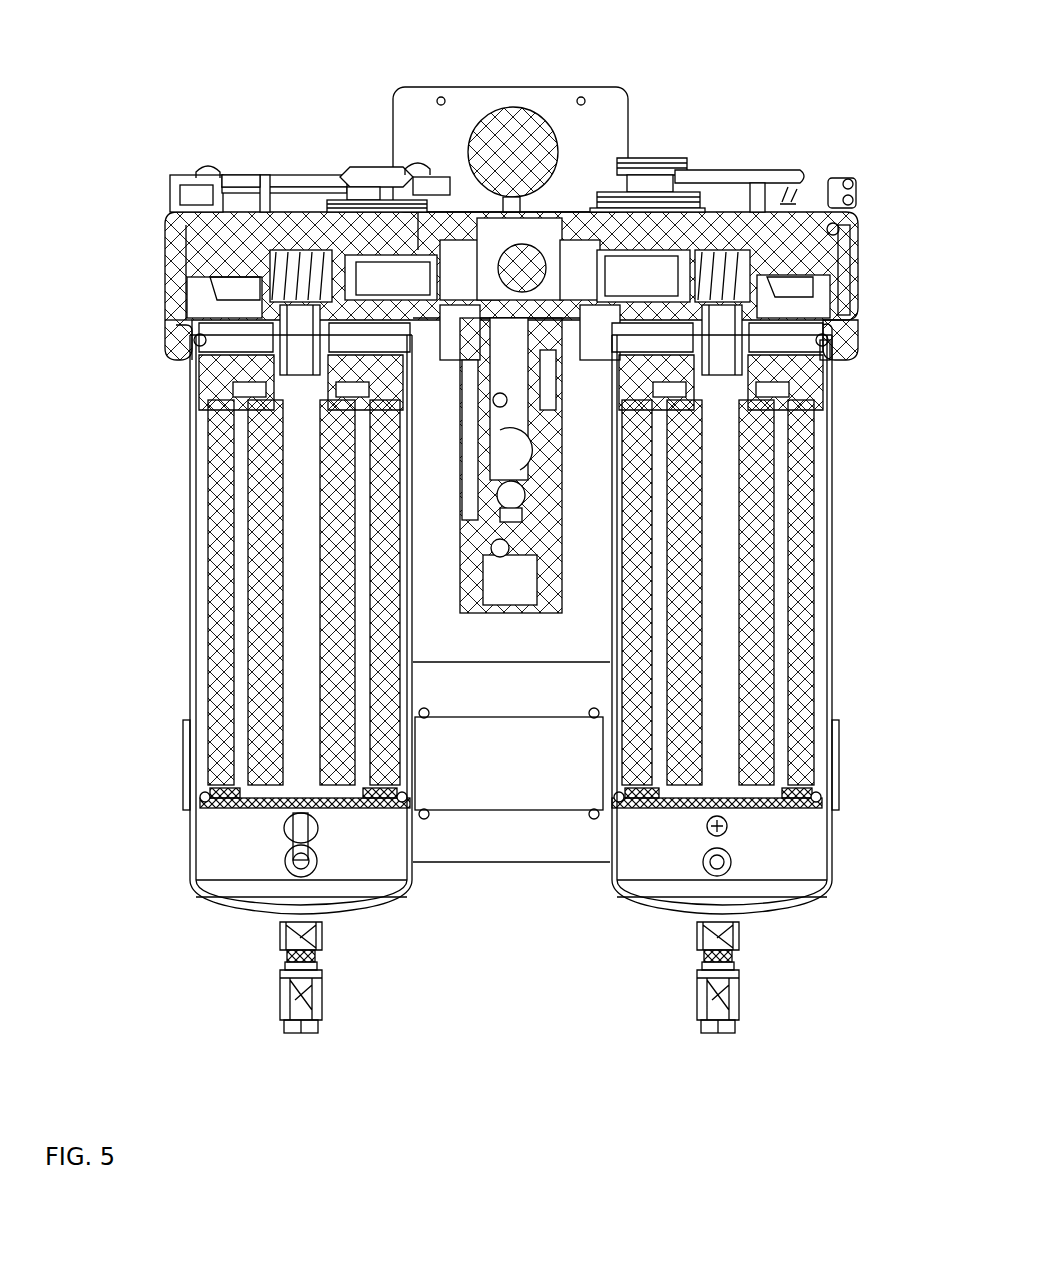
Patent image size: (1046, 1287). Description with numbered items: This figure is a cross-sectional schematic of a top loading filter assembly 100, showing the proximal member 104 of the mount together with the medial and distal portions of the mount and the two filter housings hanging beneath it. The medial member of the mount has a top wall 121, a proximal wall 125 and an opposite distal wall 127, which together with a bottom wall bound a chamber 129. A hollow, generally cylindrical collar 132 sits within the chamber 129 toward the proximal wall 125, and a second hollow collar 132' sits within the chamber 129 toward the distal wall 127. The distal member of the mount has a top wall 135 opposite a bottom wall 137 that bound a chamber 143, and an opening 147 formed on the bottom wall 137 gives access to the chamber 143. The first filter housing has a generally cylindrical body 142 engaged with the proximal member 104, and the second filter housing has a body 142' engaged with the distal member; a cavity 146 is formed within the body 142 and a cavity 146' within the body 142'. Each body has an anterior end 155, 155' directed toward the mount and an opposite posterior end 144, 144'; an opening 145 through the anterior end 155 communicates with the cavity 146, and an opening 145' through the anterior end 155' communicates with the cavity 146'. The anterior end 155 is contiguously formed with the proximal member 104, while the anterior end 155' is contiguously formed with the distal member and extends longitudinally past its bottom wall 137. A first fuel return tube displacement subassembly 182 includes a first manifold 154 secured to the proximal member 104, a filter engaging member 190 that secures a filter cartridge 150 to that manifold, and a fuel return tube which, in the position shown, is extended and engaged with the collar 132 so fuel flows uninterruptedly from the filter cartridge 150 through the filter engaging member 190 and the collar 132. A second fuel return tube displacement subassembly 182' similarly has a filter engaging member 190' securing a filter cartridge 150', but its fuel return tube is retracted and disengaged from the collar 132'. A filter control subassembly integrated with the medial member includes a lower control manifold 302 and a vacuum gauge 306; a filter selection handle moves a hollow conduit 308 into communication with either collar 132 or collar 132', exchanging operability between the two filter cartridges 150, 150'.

The top loading filter assembly 100 is at (834, 72).
The proximal member 104 is at (160, 278).
The top wall 121 is at (585, 230).
The proximal wall 125 is at (418, 212).
The distal wall 127 is at (645, 242).
The chamber 129 is at (590, 240).
The collar 132 is at (488, 193).
The collar 132' is at (631, 223).
The top wall 135 is at (838, 225).
The bottom wall 137 is at (853, 363).
The body 142 is at (252, 624).
The body 142' is at (772, 624).
The chamber 143 is at (828, 288).
The posterior end 144 is at (267, 923).
The posterior end 144' is at (783, 924).
The opening 145 is at (536, 331).
The opening 145' is at (853, 383).
The cavity 146 is at (155, 745).
The cavity 146' is at (864, 739).
The opening 147 is at (840, 318).
The filter cartridge 150 is at (267, 460).
The filter cartridge 150' is at (761, 529).
The first manifold 154 is at (240, 240).
The anterior end 155 is at (166, 343).
The anterior end 155' is at (889, 342).
The first fuel return tube displacement subassembly 182 is at (289, 140).
The second fuel return tube displacement subassembly 182' is at (875, 151).
The filter engaging member 190 is at (216, 389).
The filter engaging member 190' is at (655, 419).
The lower control manifold 302 is at (550, 625).
The vacuum gauge 306 is at (514, 128).
The hollow conduit 308 is at (512, 266).